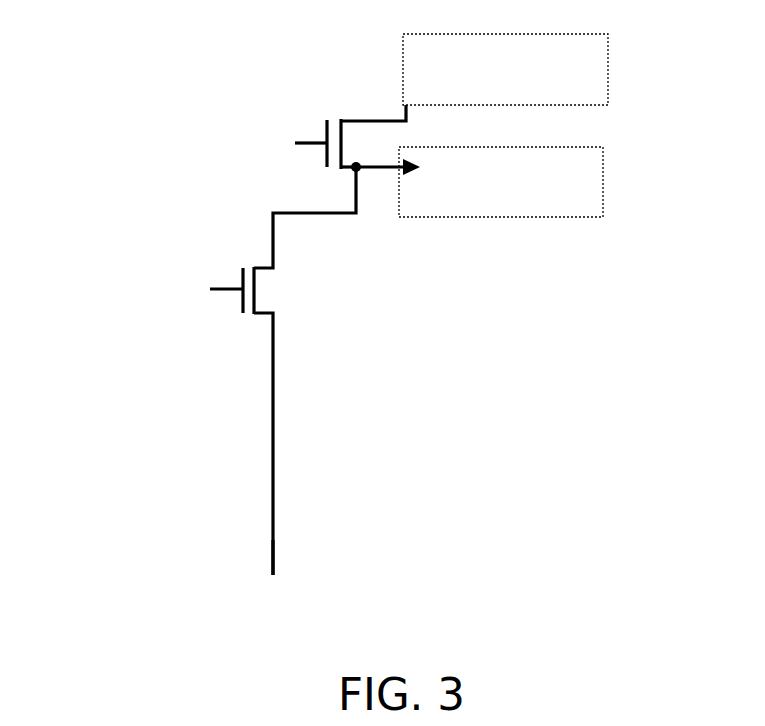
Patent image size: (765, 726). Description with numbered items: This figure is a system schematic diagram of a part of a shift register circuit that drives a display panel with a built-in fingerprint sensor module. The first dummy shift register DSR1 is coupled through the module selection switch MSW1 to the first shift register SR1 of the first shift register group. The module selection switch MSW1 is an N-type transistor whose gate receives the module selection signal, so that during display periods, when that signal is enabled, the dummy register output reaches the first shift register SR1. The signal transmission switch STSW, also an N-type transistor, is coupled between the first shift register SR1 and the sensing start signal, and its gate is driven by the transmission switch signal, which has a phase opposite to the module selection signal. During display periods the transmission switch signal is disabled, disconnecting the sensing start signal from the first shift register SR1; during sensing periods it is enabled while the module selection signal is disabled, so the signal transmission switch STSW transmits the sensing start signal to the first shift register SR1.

The first dummy shift register DSR1 is at (505, 69).
The first shift register SR1 is at (501, 182).
The module selection switch MSW1 is at (357, 131).
The signal transmission switch STSW is at (233, 401).